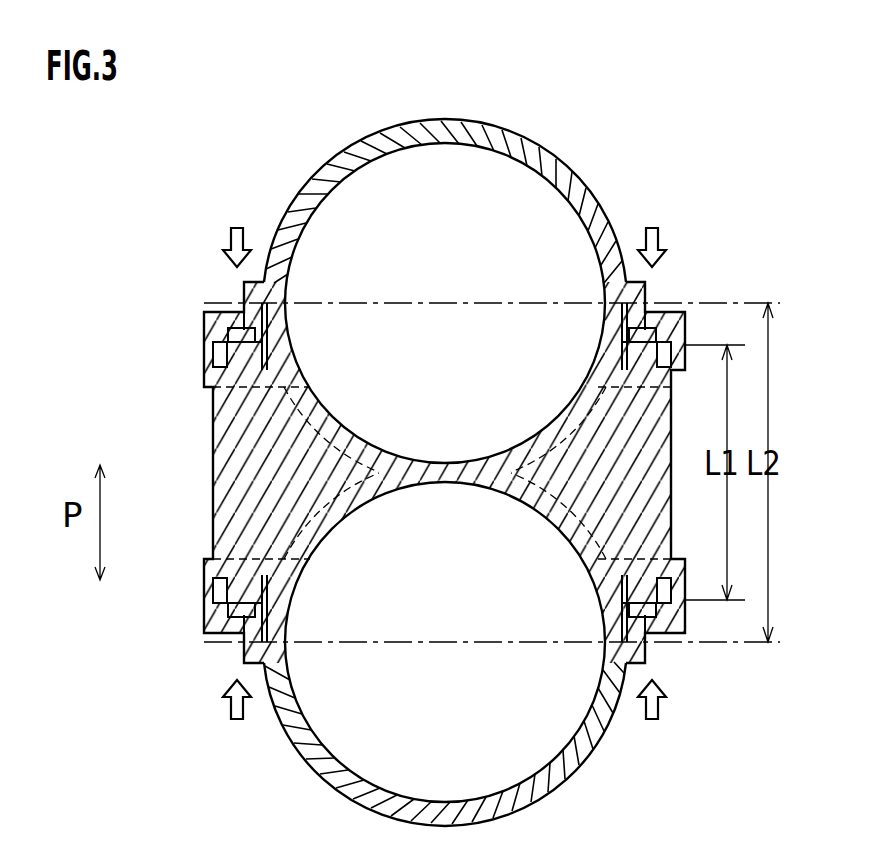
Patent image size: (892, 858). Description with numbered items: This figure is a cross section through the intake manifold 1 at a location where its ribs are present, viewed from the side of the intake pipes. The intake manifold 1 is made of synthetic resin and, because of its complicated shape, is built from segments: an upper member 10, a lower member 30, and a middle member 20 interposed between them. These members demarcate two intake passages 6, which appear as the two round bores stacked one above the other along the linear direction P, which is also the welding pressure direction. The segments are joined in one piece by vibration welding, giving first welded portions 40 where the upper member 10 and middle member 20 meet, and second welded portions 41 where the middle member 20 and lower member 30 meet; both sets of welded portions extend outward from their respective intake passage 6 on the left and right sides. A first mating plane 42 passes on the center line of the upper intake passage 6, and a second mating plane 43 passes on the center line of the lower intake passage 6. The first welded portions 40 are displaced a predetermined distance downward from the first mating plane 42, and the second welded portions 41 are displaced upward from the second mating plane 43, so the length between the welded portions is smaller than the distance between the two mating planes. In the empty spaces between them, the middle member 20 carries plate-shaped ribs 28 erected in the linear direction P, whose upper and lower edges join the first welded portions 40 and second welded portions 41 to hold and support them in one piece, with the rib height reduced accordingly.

The intake manifold 1 is at (475, 450).
The intake passage 6 is at (346, 227).
The upper member 10 is at (523, 150).
The middle member 20 is at (213, 430).
The rib 28 is at (655, 412).
The lower member 30 is at (355, 795).
The first welded portion 40 is at (203, 328).
The second welded portion 41 is at (245, 640).
The first mating plane 42 is at (730, 302).
The second mating plane 43 is at (730, 645).